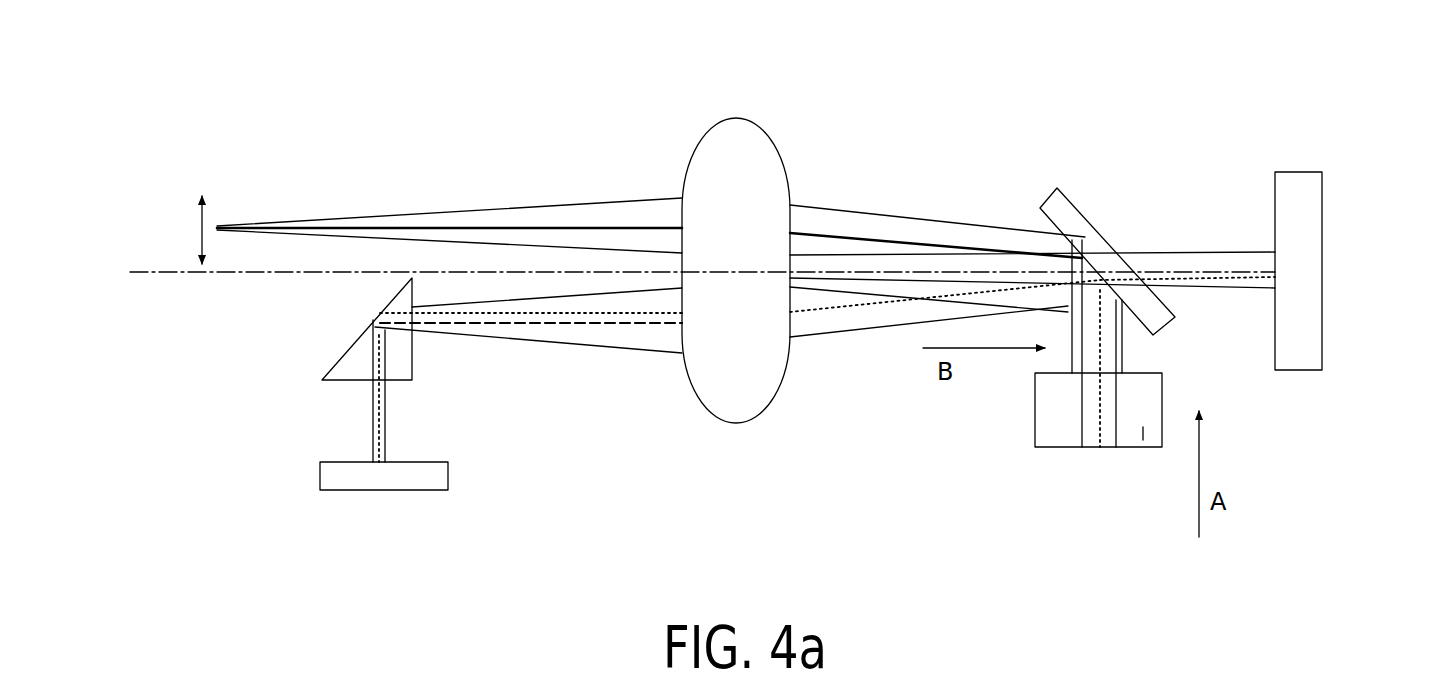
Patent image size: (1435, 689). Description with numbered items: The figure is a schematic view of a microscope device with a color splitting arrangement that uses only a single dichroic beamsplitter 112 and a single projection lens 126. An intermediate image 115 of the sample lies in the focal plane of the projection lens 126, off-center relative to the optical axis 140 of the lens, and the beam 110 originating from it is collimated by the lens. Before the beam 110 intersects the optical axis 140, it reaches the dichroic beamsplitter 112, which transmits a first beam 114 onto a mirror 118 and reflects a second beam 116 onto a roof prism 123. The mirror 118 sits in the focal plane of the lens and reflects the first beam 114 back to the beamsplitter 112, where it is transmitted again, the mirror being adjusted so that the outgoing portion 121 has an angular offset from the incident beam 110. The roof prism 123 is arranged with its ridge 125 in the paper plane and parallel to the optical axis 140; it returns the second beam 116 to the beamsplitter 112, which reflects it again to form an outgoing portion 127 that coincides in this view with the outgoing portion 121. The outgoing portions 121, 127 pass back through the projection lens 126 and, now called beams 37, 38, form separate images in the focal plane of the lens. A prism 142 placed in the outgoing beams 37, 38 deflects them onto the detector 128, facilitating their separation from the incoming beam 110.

The intermediate image 115 is at (192, 230).
The beam 110 is at (500, 227).
The projection lens 126 is at (735, 180).
The dichroic beamsplitter 112 is at (1092, 237).
The first beam 114 is at (1205, 263).
The mirror 118 is at (1312, 223).
The optical axis 140 is at (678, 280).
The prism 142 is at (347, 355).
The detector 128 is at (353, 475).
The outgoing beam 38 is at (508, 327).
The outgoing beam 37 is at (580, 327).
The outgoing portion of the first beam 121 is at (820, 323).
The outgoing portion of the second beam 127 is at (895, 310).
The second beam 116 is at (1118, 350).
The ridge 125 is at (1060, 448).
The roof prism 123 is at (1143, 427).